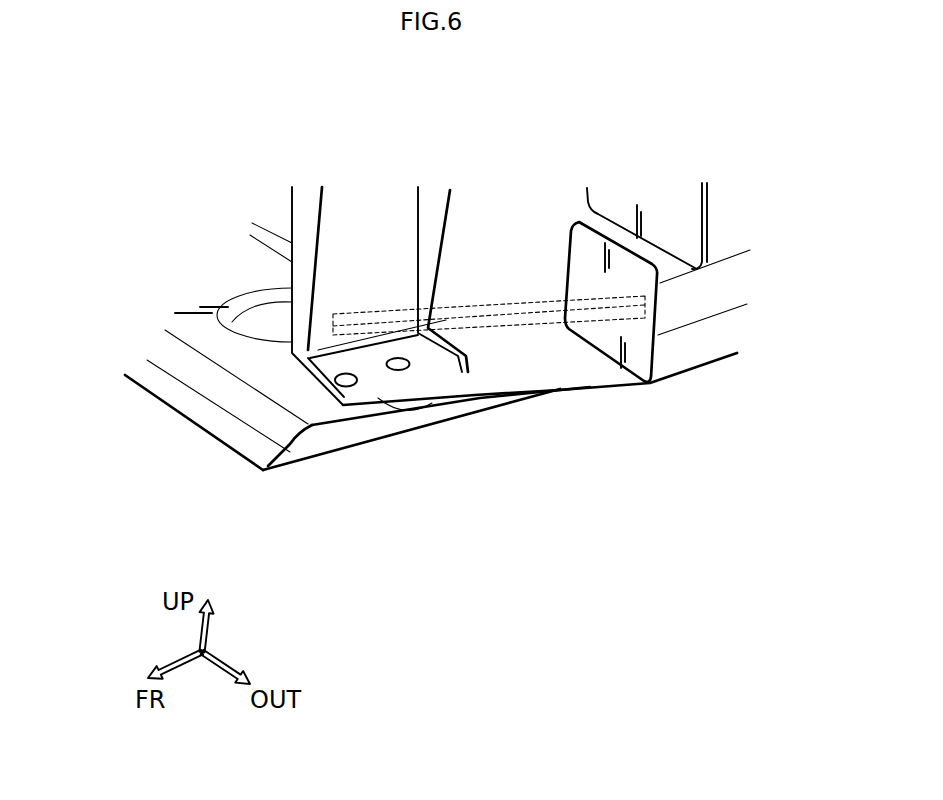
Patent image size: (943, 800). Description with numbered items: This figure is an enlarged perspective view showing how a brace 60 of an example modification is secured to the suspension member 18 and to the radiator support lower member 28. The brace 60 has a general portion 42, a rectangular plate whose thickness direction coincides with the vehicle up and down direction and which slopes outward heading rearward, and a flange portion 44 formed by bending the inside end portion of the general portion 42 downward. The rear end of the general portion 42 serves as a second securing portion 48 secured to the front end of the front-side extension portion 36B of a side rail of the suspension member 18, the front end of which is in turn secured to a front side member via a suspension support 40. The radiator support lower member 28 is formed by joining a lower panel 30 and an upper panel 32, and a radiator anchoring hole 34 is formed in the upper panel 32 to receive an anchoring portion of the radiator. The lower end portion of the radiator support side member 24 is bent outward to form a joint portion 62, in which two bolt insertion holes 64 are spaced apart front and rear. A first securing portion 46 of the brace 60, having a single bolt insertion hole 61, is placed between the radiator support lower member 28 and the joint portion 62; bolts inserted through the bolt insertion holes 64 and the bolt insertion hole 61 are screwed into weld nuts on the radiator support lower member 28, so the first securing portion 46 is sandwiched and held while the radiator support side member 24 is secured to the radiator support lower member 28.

The suspension member 18 is at (722, 360).
The radiator support side member 24 is at (470, 208).
The radiator support lower member 28 is at (173, 417).
The lower panel 30 is at (320, 470).
The upper panel 32 is at (280, 383).
The radiator anchoring hole 34 is at (243, 295).
The front-side extension portion 36B is at (700, 367).
The suspension support 40 is at (712, 215).
The general portion 42 is at (515, 375).
The flange portion 44 is at (515, 322).
The first securing portion 46 is at (373, 360).
The second securing portion 48 is at (667, 363).
The brace 60 is at (577, 397).
The bolt insertion hole 61 is at (396, 372).
The joint portion 62 is at (351, 387).
The bolt insertion hole 64 is at (405, 368).